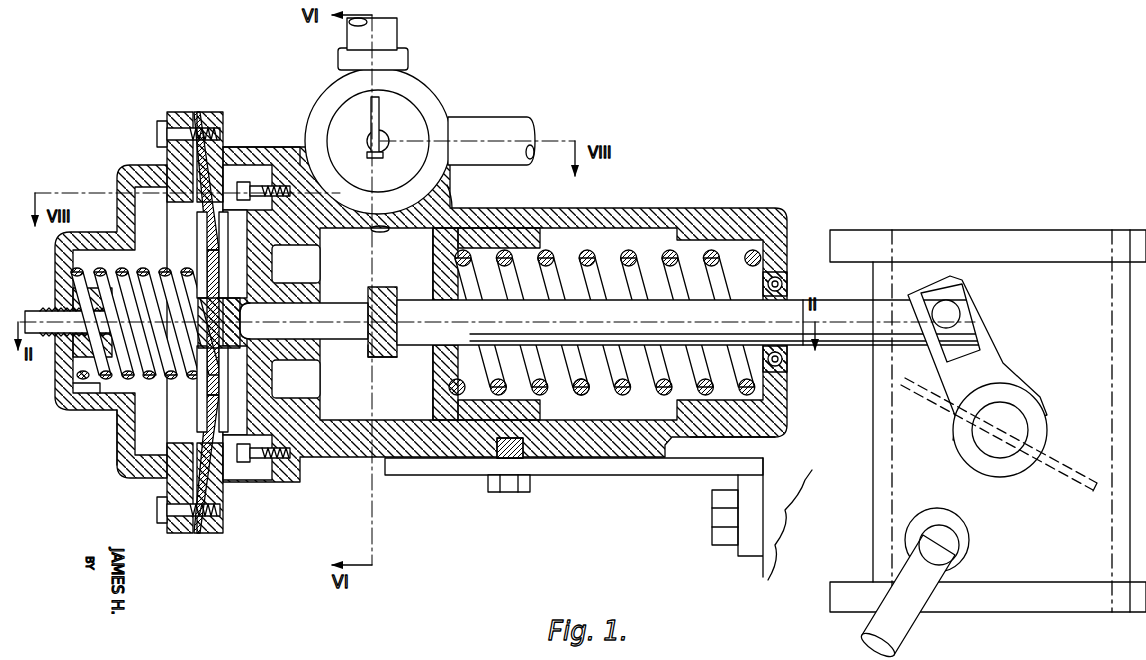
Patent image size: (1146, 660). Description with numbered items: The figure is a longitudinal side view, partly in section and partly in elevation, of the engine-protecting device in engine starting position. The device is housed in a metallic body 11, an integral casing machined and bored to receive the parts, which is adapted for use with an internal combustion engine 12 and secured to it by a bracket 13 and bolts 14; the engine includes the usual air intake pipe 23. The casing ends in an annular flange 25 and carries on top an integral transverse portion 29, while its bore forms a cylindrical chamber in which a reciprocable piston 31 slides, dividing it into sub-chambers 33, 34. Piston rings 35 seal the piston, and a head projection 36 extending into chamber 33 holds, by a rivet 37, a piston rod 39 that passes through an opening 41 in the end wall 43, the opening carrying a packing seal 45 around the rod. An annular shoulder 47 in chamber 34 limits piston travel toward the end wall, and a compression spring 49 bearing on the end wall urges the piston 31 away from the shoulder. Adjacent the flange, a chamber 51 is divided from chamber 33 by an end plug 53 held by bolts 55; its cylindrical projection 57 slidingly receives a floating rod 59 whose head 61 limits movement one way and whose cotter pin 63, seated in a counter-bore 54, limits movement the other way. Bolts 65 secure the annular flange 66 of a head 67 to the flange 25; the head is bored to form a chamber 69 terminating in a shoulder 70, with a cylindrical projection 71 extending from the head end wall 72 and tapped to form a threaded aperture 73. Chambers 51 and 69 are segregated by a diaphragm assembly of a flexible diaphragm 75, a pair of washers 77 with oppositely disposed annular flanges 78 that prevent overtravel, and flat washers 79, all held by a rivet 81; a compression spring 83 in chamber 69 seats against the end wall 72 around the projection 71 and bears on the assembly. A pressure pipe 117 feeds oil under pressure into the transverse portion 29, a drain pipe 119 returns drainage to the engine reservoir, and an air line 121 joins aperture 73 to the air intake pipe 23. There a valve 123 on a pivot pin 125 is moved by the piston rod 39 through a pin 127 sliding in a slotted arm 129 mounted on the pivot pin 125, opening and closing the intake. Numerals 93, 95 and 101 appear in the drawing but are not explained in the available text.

The body 11 is at (708, 213).
The internal combustion engine 12 is at (765, 572).
The bracket 13 is at (590, 470).
The bolts 14 is at (510, 492).
The air intake pipe 23 is at (1075, 232).
The annular flange 25 is at (211, 112).
The transverse portion 29 is at (428, 100).
The piston 31 is at (433, 248).
The sub-chamber 33 is at (432, 208).
The sub-chamber 34 is at (615, 240).
The piston rings 35 is at (512, 215).
The head projection 36 is at (386, 357).
The rivet 37 is at (428, 300).
The piston rod 39 is at (800, 345).
The opening 41 is at (787, 291).
The end wall 43 is at (786, 428).
The packing seal 45 is at (783, 372).
The annular shoulder 47 is at (680, 238).
The compression spring 49 is at (583, 396).
The chamber 51 is at (238, 165).
The end plug 53 is at (247, 385).
The counter-bore 54 is at (258, 365).
The bolts 55 is at (240, 455).
The cylindrical projection 57 is at (312, 292).
The floating rod 59 is at (336, 340).
The head 61 is at (378, 290).
The cotter pin 63 is at (335, 322).
The bolts 65 is at (157, 511).
The annular flange 66 is at (181, 112).
The head 67 is at (122, 180).
The chamber 69 is at (140, 452).
The shoulder 70 is at (133, 252).
The cylindrical projection 71 is at (96, 375).
The end wall 72 is at (58, 260).
The threaded aperture 73 is at (62, 300).
The flexible diaphragm 75 is at (212, 456).
The washers 77 is at (207, 402).
The annular flanges 78 is at (213, 215).
The flat washers 79 is at (223, 288).
The rivet 81 is at (226, 318).
The compression spring 83 is at (73, 393).
The key 93 is at (382, 105).
The knob face 95 is at (340, 124).
The vent hole 101 is at (372, 230).
The pressure pipe 117 is at (388, 36).
The drain pipe 119 is at (525, 118).
The air line 121 is at (900, 638).
The valve 123 is at (1068, 470).
The pivot pin 125 is at (1030, 428).
The pin 127 is at (945, 300).
The slotted arm 129 is at (990, 382).